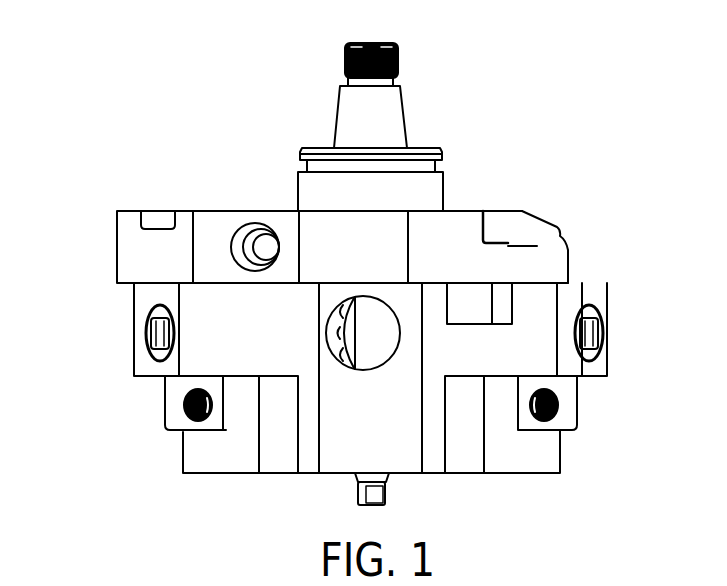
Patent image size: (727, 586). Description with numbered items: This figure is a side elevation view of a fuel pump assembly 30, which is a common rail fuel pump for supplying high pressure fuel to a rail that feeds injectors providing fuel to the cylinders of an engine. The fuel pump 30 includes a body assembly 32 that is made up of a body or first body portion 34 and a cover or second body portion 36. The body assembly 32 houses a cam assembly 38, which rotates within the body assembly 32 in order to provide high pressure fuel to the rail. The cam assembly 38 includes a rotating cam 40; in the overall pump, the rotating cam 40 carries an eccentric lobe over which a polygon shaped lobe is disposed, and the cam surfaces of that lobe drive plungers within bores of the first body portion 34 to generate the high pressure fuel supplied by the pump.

The fuel pump assembly 30 is at (84, 110).
The body assembly 32 is at (117, 223).
The first body portion 34 is at (560, 457).
The second body portion 36 is at (555, 225).
The cam assembly 38 is at (398, 46).
The rotating cam 40 is at (392, 121).